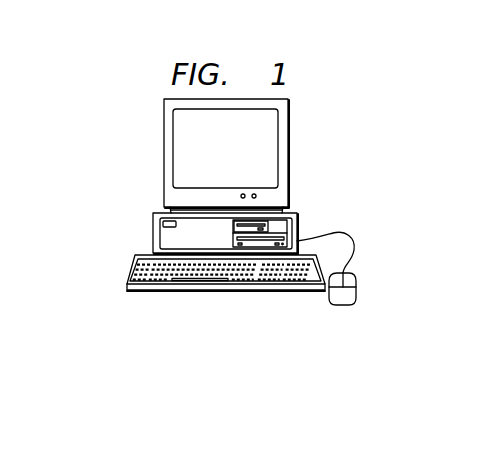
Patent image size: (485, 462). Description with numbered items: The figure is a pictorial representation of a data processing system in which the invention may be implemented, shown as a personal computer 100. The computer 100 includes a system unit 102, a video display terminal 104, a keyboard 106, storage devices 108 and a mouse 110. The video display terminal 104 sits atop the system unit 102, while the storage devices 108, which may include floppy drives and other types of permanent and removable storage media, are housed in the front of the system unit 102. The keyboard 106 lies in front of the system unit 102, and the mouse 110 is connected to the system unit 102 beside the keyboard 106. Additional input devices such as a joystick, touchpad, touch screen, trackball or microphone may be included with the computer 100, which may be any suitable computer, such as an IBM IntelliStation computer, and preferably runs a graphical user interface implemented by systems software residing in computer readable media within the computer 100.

The computer 100 is at (111, 142).
The system unit 102 is at (152, 236).
The video display terminal 104 is at (289, 151).
The keyboard 106 is at (148, 291).
The storage devices 108 is at (270, 226).
The mouse 110 is at (343, 305).